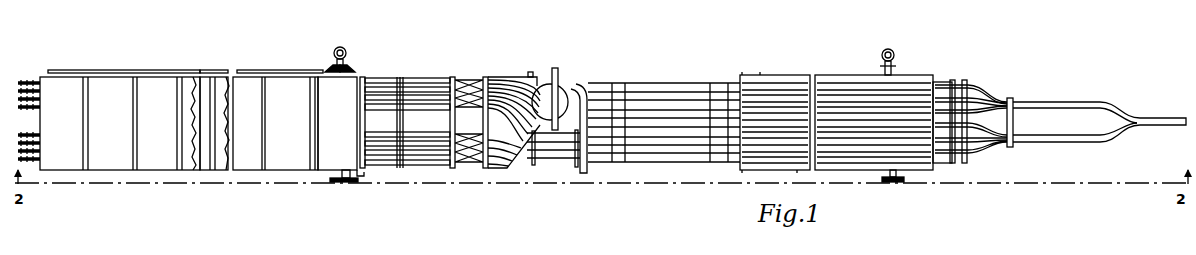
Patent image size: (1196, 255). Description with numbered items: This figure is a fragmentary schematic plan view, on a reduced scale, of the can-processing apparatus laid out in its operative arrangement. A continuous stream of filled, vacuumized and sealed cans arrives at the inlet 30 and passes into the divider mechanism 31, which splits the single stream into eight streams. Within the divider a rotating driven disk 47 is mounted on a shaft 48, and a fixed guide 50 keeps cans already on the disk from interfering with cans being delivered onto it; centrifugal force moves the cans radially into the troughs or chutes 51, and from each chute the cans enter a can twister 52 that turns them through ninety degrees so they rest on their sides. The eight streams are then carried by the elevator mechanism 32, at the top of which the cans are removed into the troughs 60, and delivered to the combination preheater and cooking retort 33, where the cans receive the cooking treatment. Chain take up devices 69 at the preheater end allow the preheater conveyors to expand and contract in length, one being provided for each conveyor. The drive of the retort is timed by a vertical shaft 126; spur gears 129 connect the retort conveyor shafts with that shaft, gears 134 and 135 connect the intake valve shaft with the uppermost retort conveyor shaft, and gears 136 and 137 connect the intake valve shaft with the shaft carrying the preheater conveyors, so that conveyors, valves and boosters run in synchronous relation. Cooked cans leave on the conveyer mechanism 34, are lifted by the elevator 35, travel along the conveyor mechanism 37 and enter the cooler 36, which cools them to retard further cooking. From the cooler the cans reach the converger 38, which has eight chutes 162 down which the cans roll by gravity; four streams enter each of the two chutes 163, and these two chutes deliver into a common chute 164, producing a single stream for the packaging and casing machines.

The inlet 30 is at (588, 156).
The divider mechanism 31 is at (555, 67).
The elevator mechanism 32 is at (420, 165).
The combination preheater and cooking retort 33 is at (252, 162).
The conveyer mechanism 34 is at (560, 143).
The elevator 35 is at (688, 148).
The cooler 36 is at (823, 68).
The conveyor mechanism 37 is at (858, 100).
The converger 38 is at (1096, 106).
The rotating driven disk 47 is at (572, 103).
The shaft 48 is at (556, 103).
The fixed guide 50 is at (576, 98).
The troughs or chutes 51 is at (512, 95).
The can twister 52 is at (470, 97).
The troughs 60 is at (390, 158).
The chain take up devices 69 is at (32, 114).
The vertical shaft 126 is at (347, 54).
The spur gears 129 is at (337, 54).
The gear 134 is at (329, 189).
The gear 135 is at (349, 192).
The gear 136 is at (355, 68).
The gear 137 is at (330, 68).
The chutes 162 is at (968, 80).
The chutes 163 is at (1055, 111).
The common chute 164 is at (1162, 118).